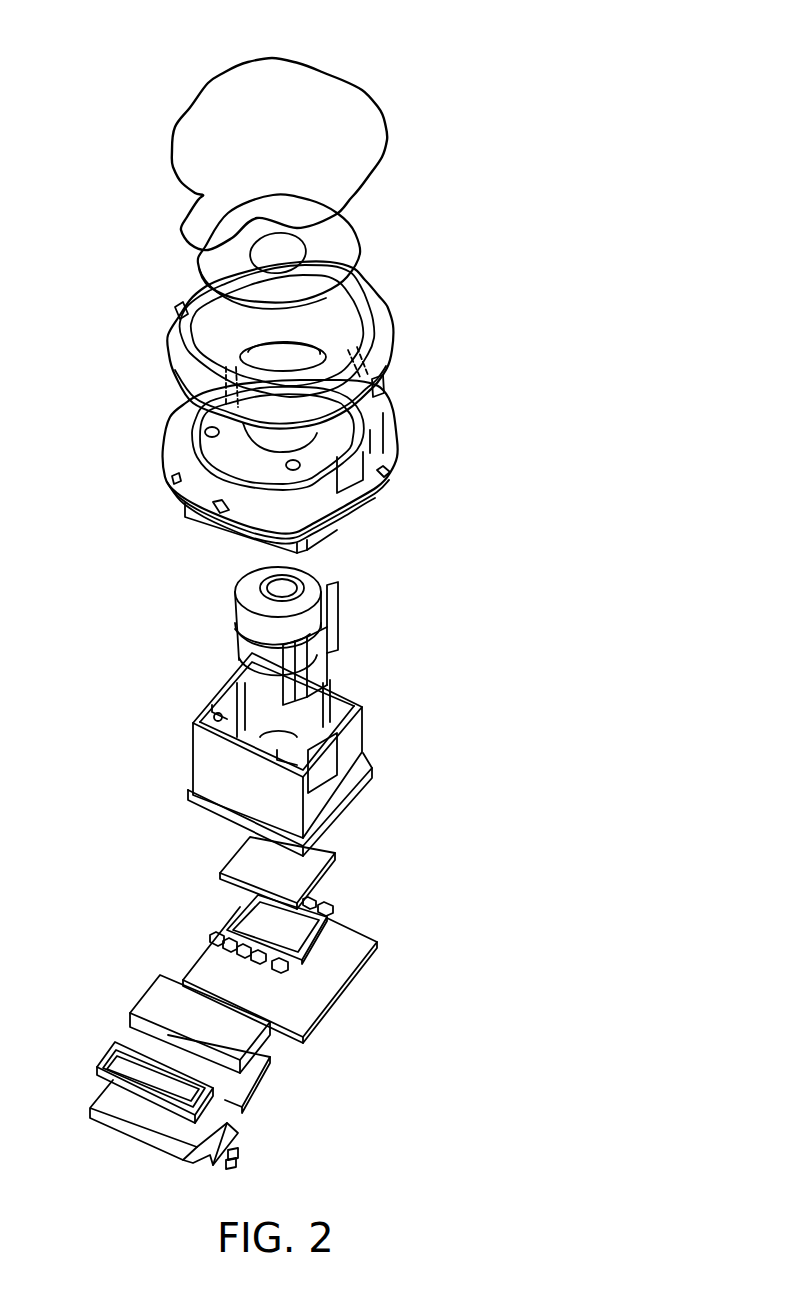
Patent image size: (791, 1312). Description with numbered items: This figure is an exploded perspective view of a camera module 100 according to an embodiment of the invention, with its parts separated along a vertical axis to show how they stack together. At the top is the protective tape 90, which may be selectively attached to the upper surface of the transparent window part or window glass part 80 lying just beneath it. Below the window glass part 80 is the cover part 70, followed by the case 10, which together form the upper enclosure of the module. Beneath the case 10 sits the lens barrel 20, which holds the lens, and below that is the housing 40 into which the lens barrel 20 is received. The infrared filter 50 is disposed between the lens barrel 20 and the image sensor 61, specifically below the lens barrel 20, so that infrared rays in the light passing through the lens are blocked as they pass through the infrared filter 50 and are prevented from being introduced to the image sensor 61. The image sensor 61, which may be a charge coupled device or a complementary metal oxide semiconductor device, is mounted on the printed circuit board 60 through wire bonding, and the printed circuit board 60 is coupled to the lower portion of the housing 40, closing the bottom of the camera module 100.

The camera module 100 is at (307, 33).
The protective tape 90 is at (373, 143).
The transparent window part or window glass part 80 is at (343, 242).
The cover part 70 is at (380, 335).
The case 10 is at (165, 433).
The lens barrel 20 is at (240, 603).
The housing 40 is at (207, 758).
The infrared filter 50 is at (240, 862).
The printed circuit board 60 is at (314, 969).
The image sensor 61 is at (335, 920).